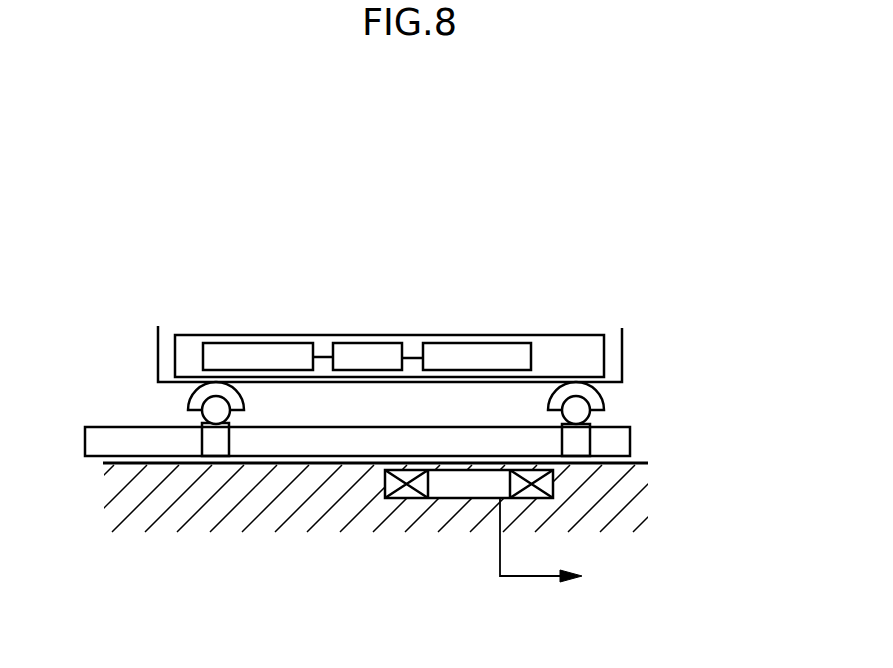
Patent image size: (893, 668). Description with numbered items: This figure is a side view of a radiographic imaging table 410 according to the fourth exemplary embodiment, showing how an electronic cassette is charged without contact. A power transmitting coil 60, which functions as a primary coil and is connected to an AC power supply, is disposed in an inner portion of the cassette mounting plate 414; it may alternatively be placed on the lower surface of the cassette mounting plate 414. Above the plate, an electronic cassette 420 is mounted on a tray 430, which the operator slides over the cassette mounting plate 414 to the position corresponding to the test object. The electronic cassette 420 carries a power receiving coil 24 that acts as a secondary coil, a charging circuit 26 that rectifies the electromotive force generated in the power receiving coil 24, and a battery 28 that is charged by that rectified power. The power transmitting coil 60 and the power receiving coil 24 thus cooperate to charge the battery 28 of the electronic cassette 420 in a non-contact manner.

The radiographic imaging table 410 is at (705, 238).
The cassette mounting plate 414 is at (227, 505).
The power transmitting coil 60 is at (448, 500).
The tray 430 is at (158, 353).
The electronic cassette 420 is at (330, 335).
The battery 28 is at (224, 352).
The charging circuit 26 is at (385, 353).
The power receiving coil 24 is at (495, 353).